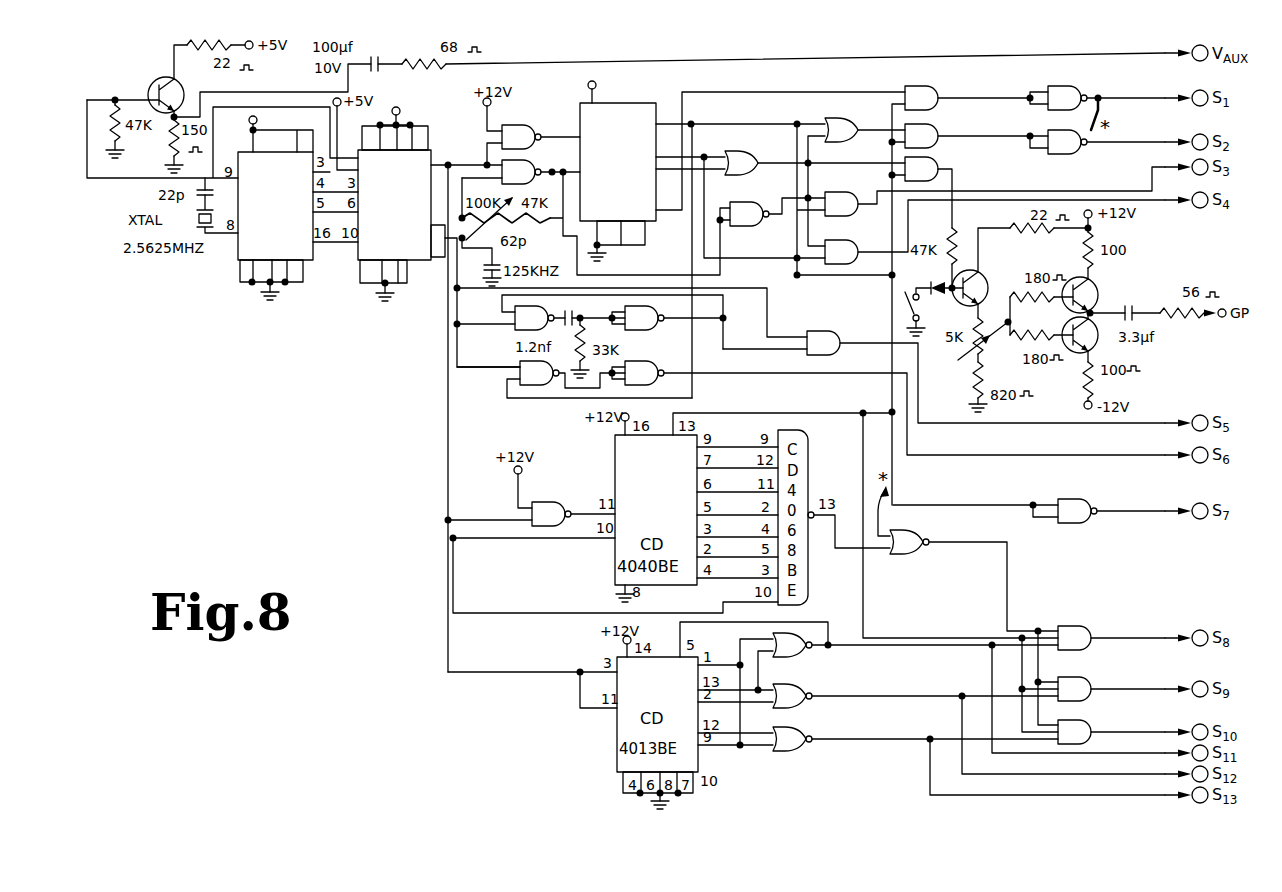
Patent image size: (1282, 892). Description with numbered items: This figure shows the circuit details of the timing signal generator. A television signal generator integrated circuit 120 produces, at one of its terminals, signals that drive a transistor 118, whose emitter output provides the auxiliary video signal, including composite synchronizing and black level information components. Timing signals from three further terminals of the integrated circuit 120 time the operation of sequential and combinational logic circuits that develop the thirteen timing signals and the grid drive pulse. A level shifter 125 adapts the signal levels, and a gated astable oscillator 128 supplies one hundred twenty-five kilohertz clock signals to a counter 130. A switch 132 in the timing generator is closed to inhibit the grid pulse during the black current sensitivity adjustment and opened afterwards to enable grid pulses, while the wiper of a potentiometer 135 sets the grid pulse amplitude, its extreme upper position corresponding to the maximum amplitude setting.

The transistor 118 is at (212, 83).
The television signal generator integrated circuit 120 is at (310, 305).
The level shifter 125 is at (423, 305).
The gated astable oscillator 128 is at (547, 115).
The counter 130 is at (631, 141).
The switch 132 is at (919, 306).
The potentiometer 135 is at (964, 362).